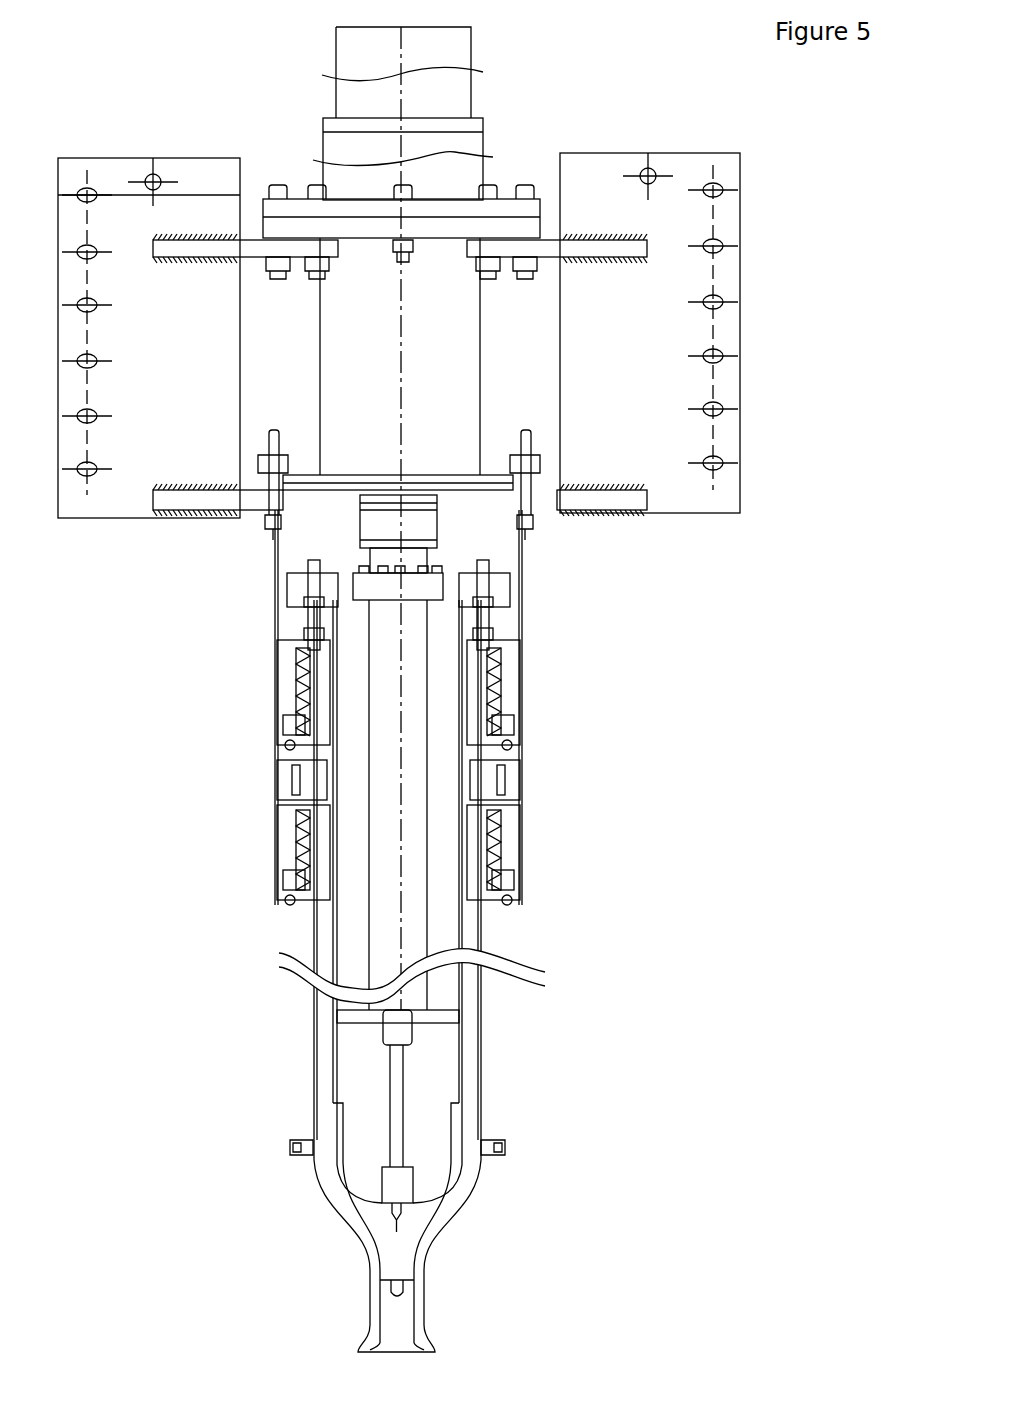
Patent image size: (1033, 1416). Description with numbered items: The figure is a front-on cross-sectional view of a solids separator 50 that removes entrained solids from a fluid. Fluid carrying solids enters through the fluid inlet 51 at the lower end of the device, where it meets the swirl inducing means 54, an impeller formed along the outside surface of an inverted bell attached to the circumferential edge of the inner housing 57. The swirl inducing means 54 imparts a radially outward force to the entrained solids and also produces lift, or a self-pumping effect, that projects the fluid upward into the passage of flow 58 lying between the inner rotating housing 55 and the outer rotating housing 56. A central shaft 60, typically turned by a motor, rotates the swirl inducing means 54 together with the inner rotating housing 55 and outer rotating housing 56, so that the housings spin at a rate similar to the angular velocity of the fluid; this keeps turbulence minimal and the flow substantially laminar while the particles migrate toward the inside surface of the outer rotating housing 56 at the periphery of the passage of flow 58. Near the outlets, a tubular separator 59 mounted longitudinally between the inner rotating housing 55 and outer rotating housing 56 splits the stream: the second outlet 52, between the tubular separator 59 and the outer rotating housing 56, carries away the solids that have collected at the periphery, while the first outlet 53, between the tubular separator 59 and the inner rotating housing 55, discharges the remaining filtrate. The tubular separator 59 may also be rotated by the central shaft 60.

The solids separator 50 is at (707, 843).
The fluid inlet 51 is at (402, 1348).
The second fluid outlet 52 is at (472, 822).
The first fluid outlet 53 is at (467, 833).
The swirl inducing means 54 is at (440, 1190).
The inner rotating housing 55 is at (473, 940).
The outer rotating housing 56 is at (483, 923).
The inner housing 57 is at (460, 1087).
The passage of flow 58 is at (470, 1020).
The tubular separator 59 is at (480, 780).
The central shaft 60 is at (415, 765).